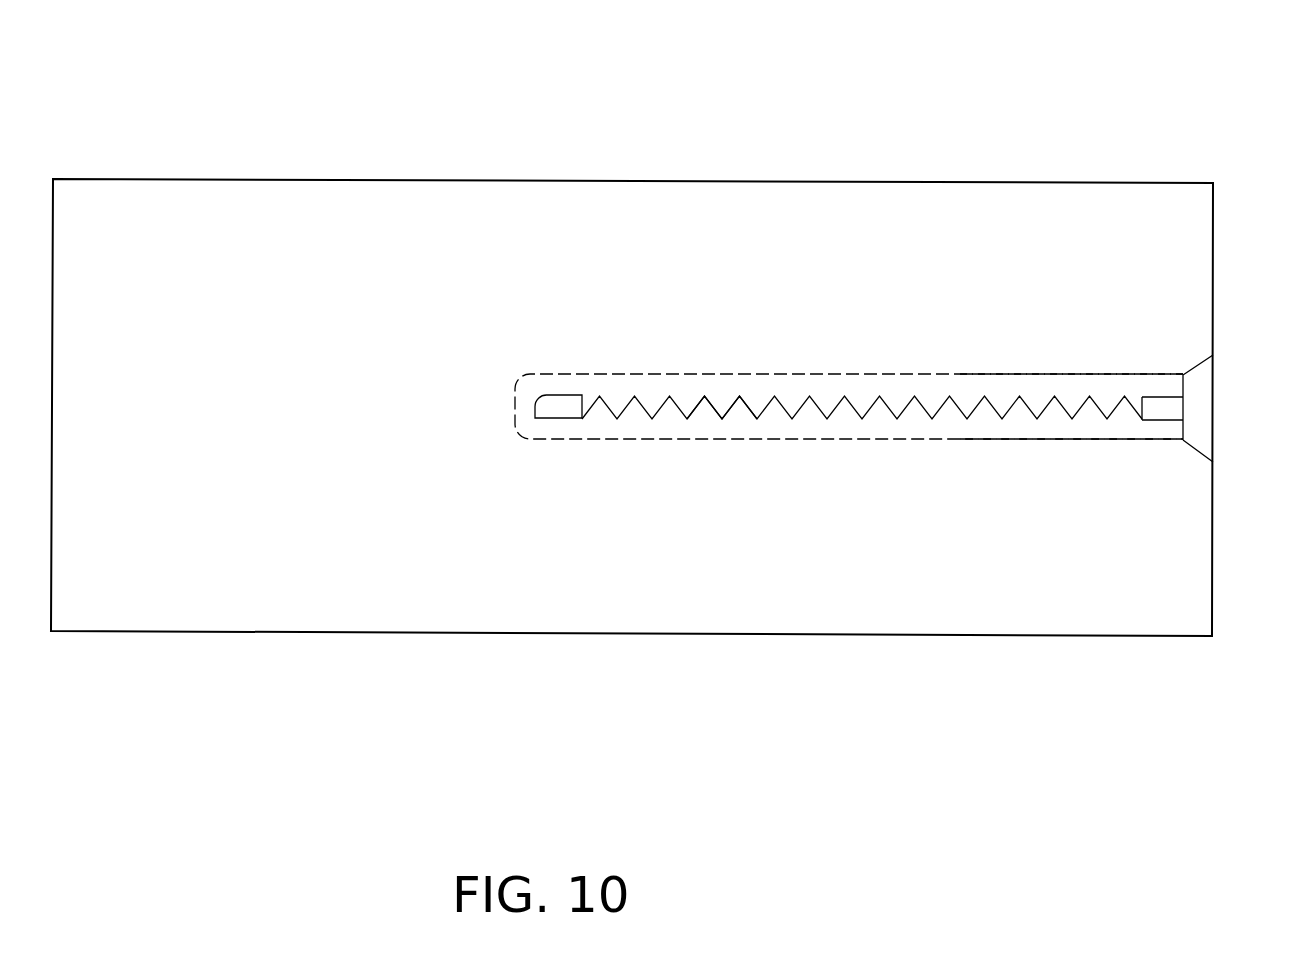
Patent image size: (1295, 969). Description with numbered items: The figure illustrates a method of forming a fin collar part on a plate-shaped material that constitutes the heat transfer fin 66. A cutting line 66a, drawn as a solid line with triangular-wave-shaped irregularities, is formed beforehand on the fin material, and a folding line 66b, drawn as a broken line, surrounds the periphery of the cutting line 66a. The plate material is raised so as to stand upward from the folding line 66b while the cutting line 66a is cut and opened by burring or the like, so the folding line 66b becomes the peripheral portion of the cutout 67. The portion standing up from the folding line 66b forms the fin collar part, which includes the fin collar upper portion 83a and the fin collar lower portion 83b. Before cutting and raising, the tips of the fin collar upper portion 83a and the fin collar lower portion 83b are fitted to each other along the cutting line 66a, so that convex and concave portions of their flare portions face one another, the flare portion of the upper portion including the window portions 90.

The heat transfer fin 66 is at (1229, 131).
The cutting line 66a is at (852, 410).
The folding line 66b is at (862, 374).
The cutout 67 is at (1201, 450).
The fin collar upper portion 83a is at (1039, 388).
The fin collar lower portion 83b is at (1042, 428).
The window portions 90 is at (740, 397).